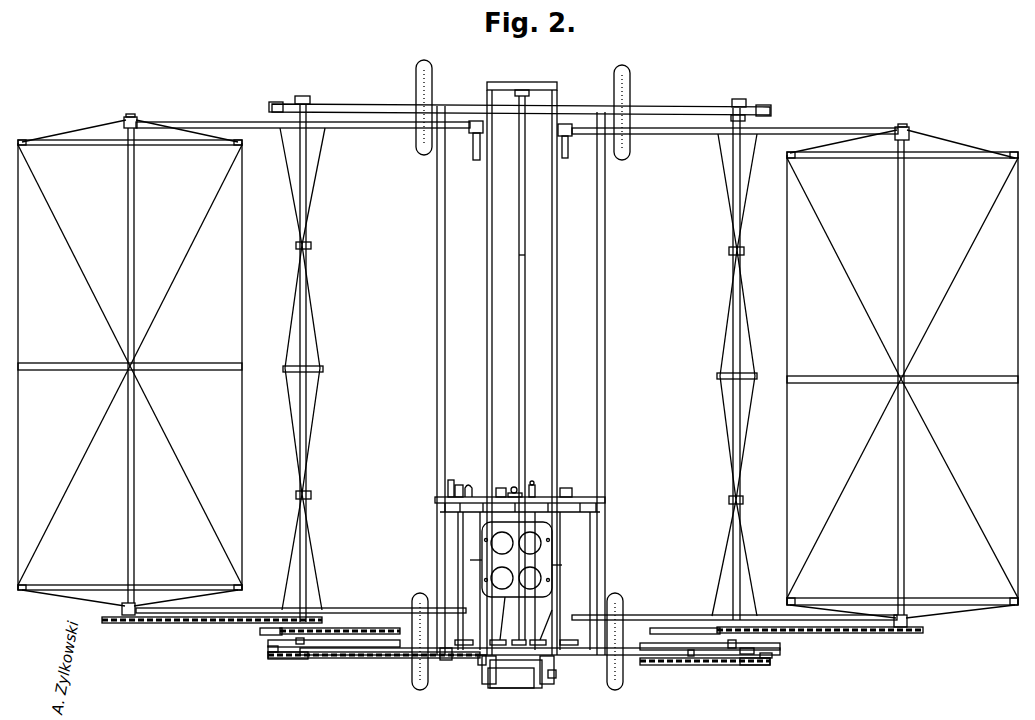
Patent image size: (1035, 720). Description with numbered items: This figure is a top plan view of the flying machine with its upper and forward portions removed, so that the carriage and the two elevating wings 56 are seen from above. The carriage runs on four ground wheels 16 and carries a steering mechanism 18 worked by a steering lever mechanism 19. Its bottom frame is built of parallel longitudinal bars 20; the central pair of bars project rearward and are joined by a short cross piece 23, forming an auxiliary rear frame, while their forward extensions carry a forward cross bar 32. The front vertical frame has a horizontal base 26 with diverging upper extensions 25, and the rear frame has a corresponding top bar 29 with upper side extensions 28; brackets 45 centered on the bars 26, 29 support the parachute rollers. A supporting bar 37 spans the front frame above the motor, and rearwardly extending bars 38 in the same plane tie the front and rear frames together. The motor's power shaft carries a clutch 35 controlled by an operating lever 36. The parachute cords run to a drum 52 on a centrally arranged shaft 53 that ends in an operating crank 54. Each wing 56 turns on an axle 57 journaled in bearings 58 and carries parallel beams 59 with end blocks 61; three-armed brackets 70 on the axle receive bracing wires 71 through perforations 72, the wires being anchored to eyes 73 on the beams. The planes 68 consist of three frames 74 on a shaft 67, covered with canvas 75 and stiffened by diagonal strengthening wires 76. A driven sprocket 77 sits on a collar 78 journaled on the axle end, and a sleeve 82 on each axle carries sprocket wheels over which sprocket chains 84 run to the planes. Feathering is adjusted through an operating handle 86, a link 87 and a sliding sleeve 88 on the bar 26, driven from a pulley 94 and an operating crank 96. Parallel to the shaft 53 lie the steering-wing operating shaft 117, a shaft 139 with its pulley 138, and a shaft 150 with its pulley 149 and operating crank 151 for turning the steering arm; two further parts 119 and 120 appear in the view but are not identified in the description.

The ground wheels 16 is at (432, 72).
The steering mechanism 18 is at (445, 660).
The steering lever mechanism 19 is at (447, 484).
The longitudinal bars 20 is at (486, 295).
The short cross piece 23 is at (497, 82).
The diverging extensions 25 is at (270, 652).
The base 26 is at (392, 658).
The upper side extensions 28 is at (269, 107).
The top bar 29 is at (366, 104).
The forward cross bar 32 is at (505, 688).
The clutch 35 is at (590, 497).
The operating lever 36 is at (458, 484).
The supporting bar 37 is at (488, 685).
The rearwardly extending bars 38 is at (437, 295).
The brackets 45 is at (484, 125).
The drum 52 is at (480, 666).
The shaft 53 is at (524, 581).
The operating crank 54 is at (510, 483).
The elevating wings 56 is at (470, 486).
The axle 57 is at (292, 335).
The bearings 58 is at (311, 98).
The beams 59 is at (396, 129).
The end blocks 61 is at (552, 680).
The shaft 67 is at (124, 123).
The planes 68 is at (518, 366).
The three armed brackets 70 is at (296, 245).
The bracing wires 71 is at (307, 208).
The perforations 72 is at (311, 495).
The eyes 73 is at (280, 131).
The frames 74 is at (104, 145).
The canvas covering 75 is at (518, 374).
The strengthening wires 76 is at (75, 255).
The driven sprocket 77 is at (272, 660).
The collar 78 is at (746, 665).
The sleeve 82 is at (268, 642).
The sprocket chains 84 is at (165, 623).
The operating handle 86 is at (298, 645).
The link 87 is at (330, 628).
The sliding sleeve 88 is at (358, 658).
The pulley 94 is at (466, 640).
The operating crank 96 is at (564, 487).
The operating shaft 117 is at (519, 260).
The central shaft 119 is at (530, 90).
The fitting 120 is at (498, 487).
The pulley 138 is at (507, 614).
The shaft 139 is at (470, 560).
The pulley 149 is at (553, 625).
The shaft 150 is at (562, 565).
The operating crank 151 is at (532, 480).